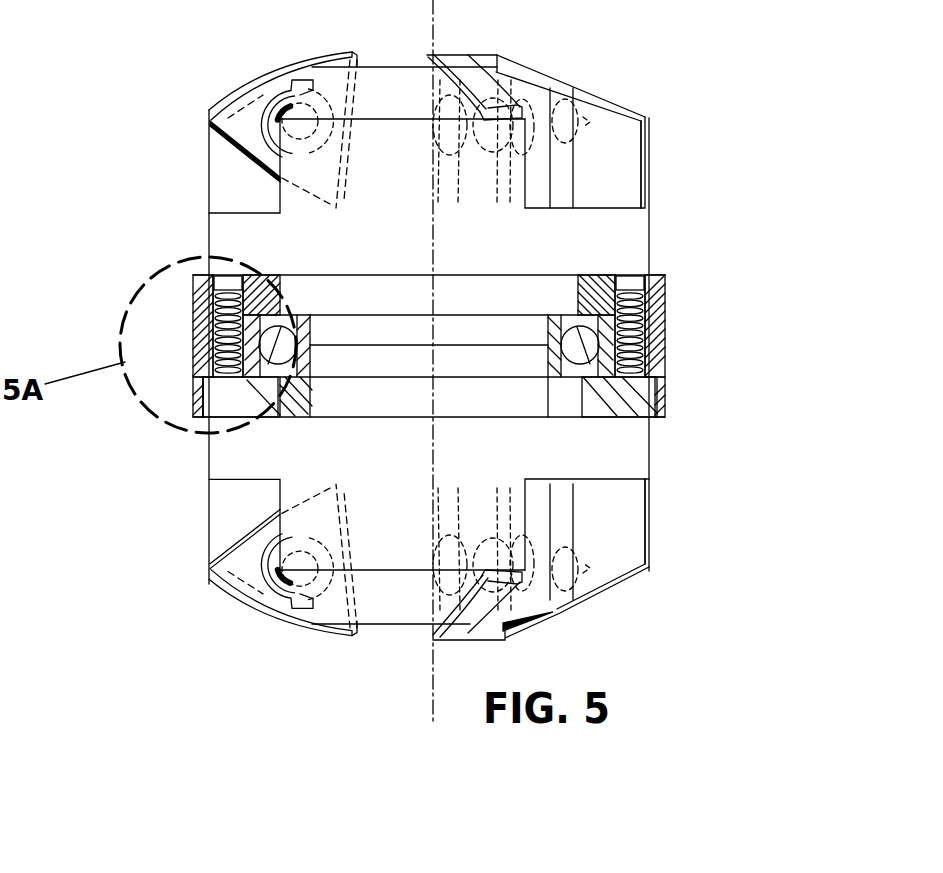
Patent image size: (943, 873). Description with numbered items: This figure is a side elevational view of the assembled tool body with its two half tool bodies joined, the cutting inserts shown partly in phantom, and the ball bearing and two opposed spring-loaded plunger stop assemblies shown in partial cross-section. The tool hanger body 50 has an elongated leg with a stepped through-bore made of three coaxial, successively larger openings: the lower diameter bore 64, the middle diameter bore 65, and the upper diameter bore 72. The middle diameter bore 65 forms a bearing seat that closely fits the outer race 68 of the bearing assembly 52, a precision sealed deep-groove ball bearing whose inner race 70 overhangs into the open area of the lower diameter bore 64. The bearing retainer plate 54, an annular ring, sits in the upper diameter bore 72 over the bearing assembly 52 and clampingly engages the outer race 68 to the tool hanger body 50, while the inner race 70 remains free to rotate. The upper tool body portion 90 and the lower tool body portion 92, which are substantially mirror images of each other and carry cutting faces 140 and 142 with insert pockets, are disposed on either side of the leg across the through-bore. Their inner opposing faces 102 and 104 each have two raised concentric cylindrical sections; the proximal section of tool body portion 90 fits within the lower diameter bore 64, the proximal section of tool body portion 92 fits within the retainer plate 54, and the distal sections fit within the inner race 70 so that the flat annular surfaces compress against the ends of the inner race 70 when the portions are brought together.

The tool hanger body 50 is at (666, 350).
The bearing assembly 52 is at (648, 325).
The bearing retainer plate 54 is at (208, 392).
The lower diameter bore 64 is at (276, 280).
The middle diameter bore 65 is at (218, 333).
The outer race 68 is at (650, 425).
The inner race 70 is at (305, 380).
The upper diameter bore 72 is at (660, 395).
The upper tool body portion 90 is at (652, 480).
The lower tool body portion 92 is at (607, 104).
The inner opposing face 102 is at (553, 418).
The inner opposing face 104 is at (542, 274).
The cutting face 140 is at (412, 573).
The cutting face 142 is at (605, 92).